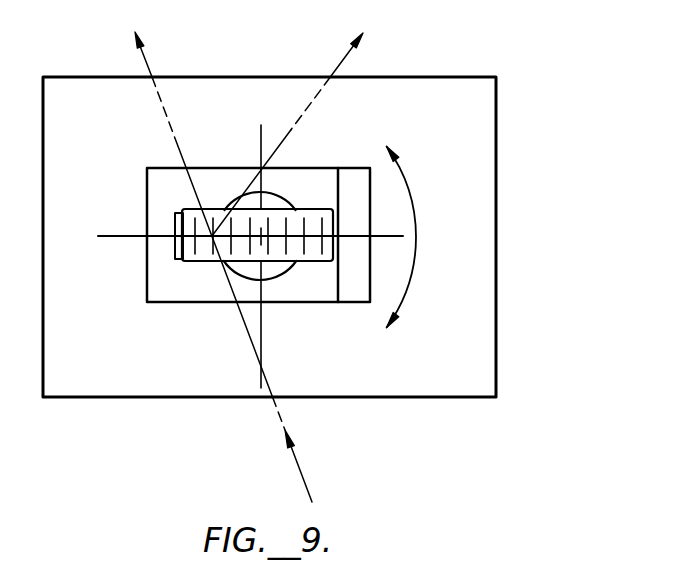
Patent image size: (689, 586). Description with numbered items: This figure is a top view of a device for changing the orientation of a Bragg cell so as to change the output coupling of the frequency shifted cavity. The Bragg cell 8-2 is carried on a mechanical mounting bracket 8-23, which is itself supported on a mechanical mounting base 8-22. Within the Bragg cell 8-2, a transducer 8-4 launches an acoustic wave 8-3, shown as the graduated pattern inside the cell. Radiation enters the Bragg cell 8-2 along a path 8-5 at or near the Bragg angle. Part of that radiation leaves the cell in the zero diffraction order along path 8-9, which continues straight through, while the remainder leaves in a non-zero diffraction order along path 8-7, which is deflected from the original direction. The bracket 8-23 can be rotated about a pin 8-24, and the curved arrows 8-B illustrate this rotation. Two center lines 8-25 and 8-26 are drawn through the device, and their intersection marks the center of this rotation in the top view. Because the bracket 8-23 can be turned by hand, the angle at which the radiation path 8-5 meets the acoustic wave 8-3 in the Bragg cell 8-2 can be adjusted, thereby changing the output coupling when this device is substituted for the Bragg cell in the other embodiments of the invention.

The mechanical mounting base 8-22 is at (497, 237).
The mechanical mounting bracket 8-23 is at (350, 305).
The center line 8-25 is at (119, 233).
The center line 8-26 is at (259, 374).
The pin 8-24 is at (287, 192).
The Bragg cell 8-2 is at (200, 209).
The acoustic wave 8-3 is at (202, 262).
The transducer 8-4 is at (175, 247).
The path of radiation in zero diffraction order 8-9 is at (150, 70).
The path of radiation entering the Bragg cell 8-5 is at (298, 465).
The path of radiation in non-zero diffraction order 8-7 is at (340, 68).
The rotation arrows 8-B is at (413, 208).